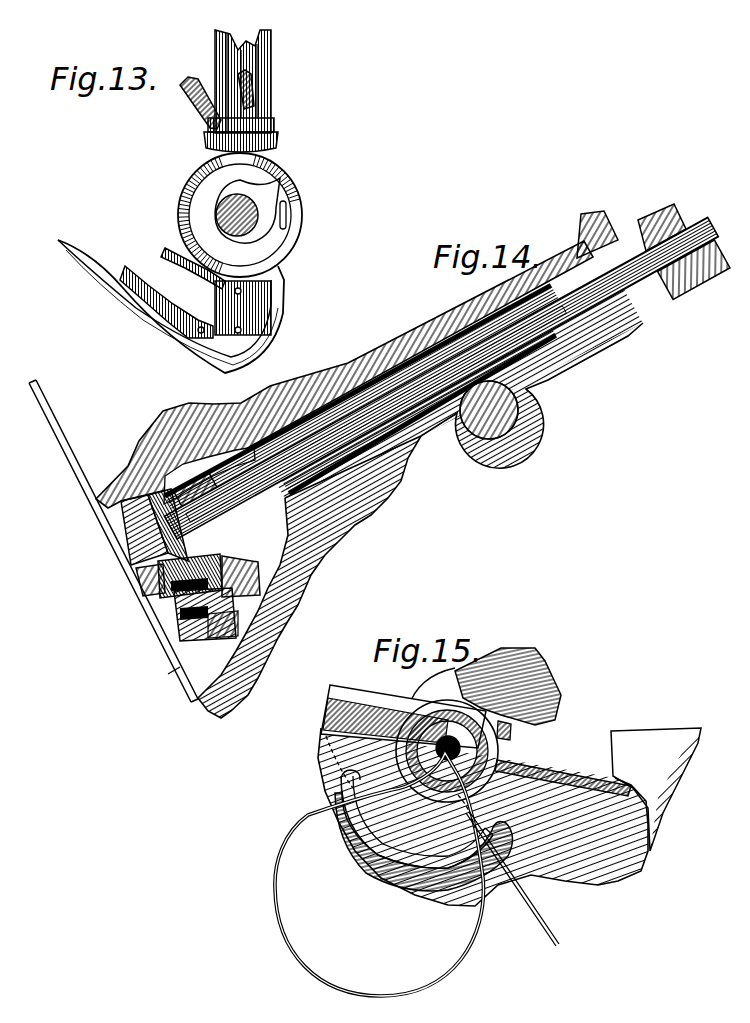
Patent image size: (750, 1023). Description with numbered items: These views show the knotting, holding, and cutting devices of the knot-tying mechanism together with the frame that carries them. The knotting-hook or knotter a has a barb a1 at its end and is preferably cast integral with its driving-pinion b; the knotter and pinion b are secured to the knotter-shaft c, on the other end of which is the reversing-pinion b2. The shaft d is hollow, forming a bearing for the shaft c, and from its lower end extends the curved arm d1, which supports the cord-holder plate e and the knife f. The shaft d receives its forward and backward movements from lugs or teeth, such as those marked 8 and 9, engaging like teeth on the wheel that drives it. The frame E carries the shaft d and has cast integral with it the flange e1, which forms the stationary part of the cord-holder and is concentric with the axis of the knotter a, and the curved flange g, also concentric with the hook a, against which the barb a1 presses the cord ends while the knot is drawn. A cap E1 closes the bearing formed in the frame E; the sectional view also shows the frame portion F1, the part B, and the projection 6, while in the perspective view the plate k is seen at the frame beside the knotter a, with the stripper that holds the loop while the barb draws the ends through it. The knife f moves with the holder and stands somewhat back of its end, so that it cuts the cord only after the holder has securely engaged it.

In FIG. 13, the knotting-hook a is at (240, 215).
In FIG. 14, the knotting-hook a is at (154, 527).
In FIG. 15, the knotting-hook a is at (447, 751).
In FIG. 13, the driving-pinion b is at (229, 146).
In FIG. 14, the driving-pinion b is at (201, 500).
In FIG. 15, the driving-pinion b is at (515, 740).
In FIG. 14, the knotter-shaft c is at (445, 382).
In FIG. 13, the cord-holder shaft d is at (250, 81).
In FIG. 14, the cord-holder shaft d is at (376, 413).
In FIG. 15, the cord-holder shaft d is at (424, 842).
In FIG. 13, the curved arm d1 is at (171, 310).
In FIG. 14, the curved arm d1 is at (241, 576).
In FIG. 13, the cord-holder plate e is at (166, 302).
In FIG. 14, the cord-holder plate e is at (206, 623).
In FIG. 15, the cord-holder plate e is at (417, 819).
In FIG. 14, the flange e1 is at (163, 667).
In FIG. 13, the knife f is at (190, 274).
In FIG. 14, the knife f is at (190, 575).
In FIG. 14, the curved flange g is at (113, 541).
In FIG. 13, the prong 8 is at (192, 92).
In FIG. 13, the prong 9 is at (244, 79).
In FIG. 14, the lug 6 is at (597, 224).
In FIG. 14, the reversing-pinion b2 is at (662, 221).
In FIG. 15, the frame E is at (509, 817).
In FIG. 14, the cap E1 is at (344, 418).
In FIG. 15, the cap E1 is at (484, 678).
In FIG. 14, the frame plate F1 is at (420, 503).
In FIG. 14, the pivot bolt B is at (489, 410).
In FIG. 15, the plate k is at (320, 708).
In FIG. 15, the barb a1 is at (482, 771).